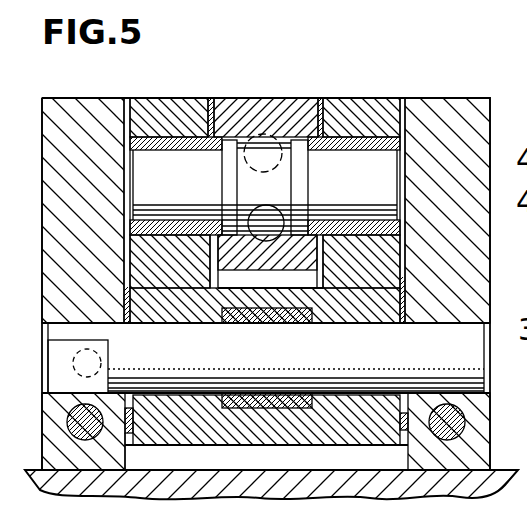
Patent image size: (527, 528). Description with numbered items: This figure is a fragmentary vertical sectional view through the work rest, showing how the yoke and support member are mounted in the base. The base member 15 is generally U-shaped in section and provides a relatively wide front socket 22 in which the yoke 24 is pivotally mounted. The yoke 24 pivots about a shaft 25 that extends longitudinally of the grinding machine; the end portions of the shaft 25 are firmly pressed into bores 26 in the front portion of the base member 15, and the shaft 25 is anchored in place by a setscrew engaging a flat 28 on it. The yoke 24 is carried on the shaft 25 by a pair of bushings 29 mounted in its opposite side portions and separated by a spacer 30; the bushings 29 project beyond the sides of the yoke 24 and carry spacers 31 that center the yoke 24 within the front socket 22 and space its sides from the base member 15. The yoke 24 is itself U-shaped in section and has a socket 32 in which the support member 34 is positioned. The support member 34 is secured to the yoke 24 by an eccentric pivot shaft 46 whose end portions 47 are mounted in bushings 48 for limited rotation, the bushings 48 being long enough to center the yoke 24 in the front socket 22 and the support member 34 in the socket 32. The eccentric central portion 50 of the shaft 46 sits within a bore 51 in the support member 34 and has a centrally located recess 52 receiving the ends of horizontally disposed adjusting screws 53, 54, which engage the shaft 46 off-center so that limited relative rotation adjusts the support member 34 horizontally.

The base member 15 is at (490, 97).
The front socket 22 is at (410, 97).
The yoke 24 is at (382, 260).
The shaft 25 is at (470, 364).
The bores 26 is at (57, 324).
The flat 28 is at (62, 372).
The bushings 29 is at (163, 318).
The spacer 30 is at (263, 318).
The spacers 31 is at (125, 291).
The socket 32 is at (322, 97).
The support member 34 is at (258, 97).
The pivot pin or shaft 46 is at (364, 155).
The end portions 47 is at (166, 199).
The bushings 48 is at (124, 222).
The eccentric central portion 50 is at (227, 187).
The bore 51 is at (233, 247).
The recess 52 is at (300, 175).
The adjusting screw 53 is at (268, 150).
The adjusting screw 54 is at (270, 205).